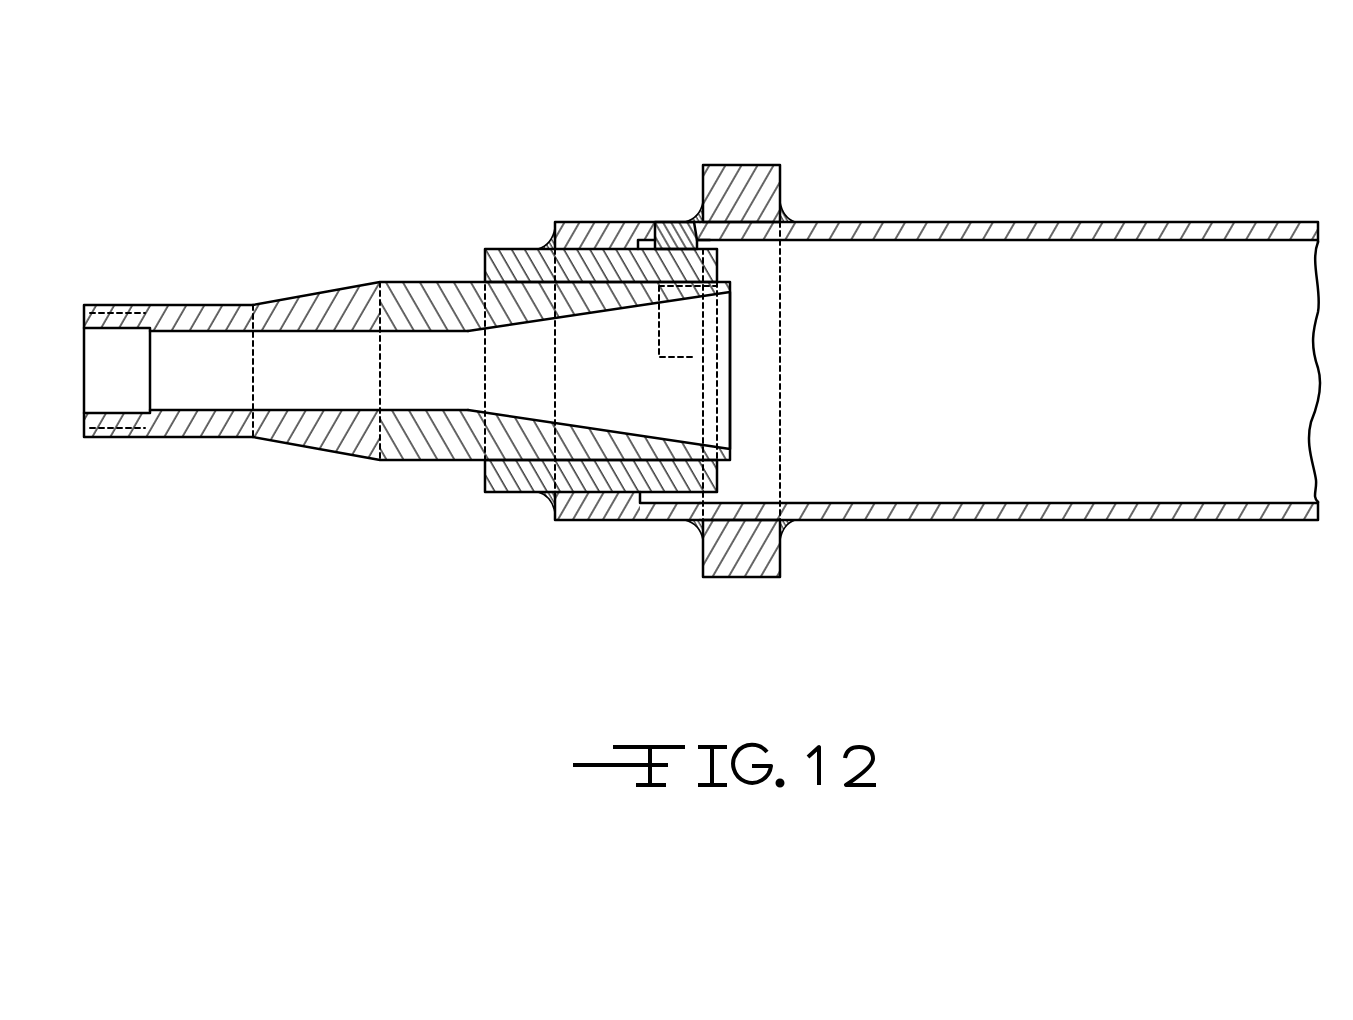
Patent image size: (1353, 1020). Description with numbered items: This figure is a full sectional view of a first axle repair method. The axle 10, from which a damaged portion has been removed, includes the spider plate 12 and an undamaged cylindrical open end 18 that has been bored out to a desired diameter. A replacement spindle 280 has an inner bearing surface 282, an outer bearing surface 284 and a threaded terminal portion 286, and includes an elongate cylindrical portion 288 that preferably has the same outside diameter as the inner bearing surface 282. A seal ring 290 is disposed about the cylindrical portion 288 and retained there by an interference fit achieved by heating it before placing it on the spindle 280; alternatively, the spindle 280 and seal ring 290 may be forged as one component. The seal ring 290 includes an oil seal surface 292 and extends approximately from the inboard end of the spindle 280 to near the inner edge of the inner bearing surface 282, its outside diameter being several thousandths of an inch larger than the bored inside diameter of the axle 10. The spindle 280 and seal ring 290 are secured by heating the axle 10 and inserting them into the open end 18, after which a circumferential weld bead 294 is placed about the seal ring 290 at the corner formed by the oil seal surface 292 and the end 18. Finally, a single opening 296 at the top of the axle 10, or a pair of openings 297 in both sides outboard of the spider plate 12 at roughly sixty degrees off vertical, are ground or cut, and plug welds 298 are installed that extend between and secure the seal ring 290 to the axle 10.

The axle 10 is at (960, 181).
The spider plate 12 is at (743, 187).
The cylindrical open end 18 is at (640, 352).
The replacement spindle 280 is at (407, 399).
The inner bearing surface 282 is at (408, 278).
The outer bearing surface 284 is at (200, 306).
The threaded terminal portion 286 is at (112, 304).
The elongate cylindrical portion 288 is at (603, 280).
The seal ring 290 is at (513, 482).
The oil seal surface 292 is at (515, 247).
The circumferential weld bead 294 is at (542, 247).
The single opening 296 is at (697, 237).
The pair of openings 297 is at (702, 332).
The plug weld 298 is at (667, 222).